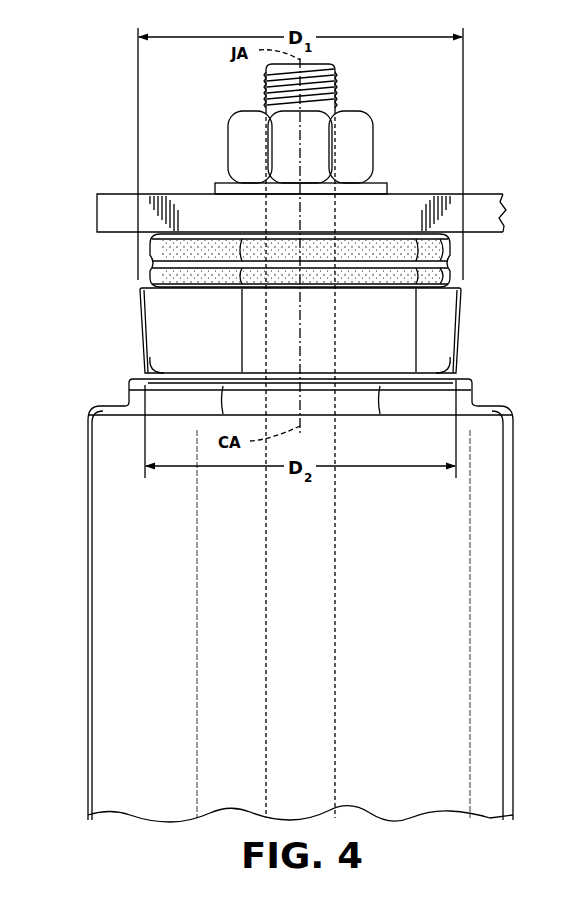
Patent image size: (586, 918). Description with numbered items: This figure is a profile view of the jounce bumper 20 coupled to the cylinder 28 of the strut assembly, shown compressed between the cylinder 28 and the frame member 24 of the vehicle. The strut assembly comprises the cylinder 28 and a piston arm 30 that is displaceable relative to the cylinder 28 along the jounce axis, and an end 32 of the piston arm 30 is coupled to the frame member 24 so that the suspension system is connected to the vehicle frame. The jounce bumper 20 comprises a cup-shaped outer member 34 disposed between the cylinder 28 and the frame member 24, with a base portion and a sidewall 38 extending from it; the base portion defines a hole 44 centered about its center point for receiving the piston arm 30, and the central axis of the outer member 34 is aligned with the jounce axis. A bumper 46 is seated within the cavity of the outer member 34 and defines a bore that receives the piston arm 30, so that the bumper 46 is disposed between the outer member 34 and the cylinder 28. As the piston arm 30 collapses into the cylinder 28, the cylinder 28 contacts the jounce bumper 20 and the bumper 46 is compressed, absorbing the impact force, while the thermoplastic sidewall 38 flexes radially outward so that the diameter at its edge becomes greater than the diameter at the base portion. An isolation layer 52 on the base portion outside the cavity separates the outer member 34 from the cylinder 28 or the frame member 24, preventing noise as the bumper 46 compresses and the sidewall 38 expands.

The jounce bumper 20 is at (306, 308).
The frame member 24 is at (505, 206).
The cylinder 28 is at (495, 569).
The piston arm 30 is at (336, 335).
The end 32 is at (348, 80).
The outer member 34 is at (262, 332).
The sidewall 38 is at (150, 318).
The hole 44 is at (338, 389).
The bumper 46 is at (446, 251).
The isolation layer 52 is at (150, 362).